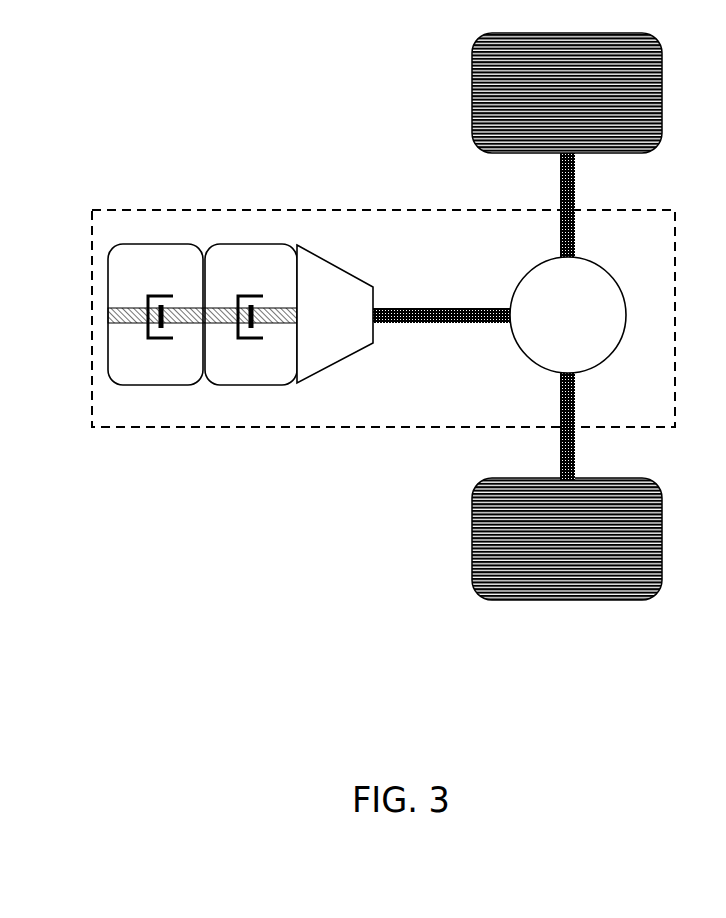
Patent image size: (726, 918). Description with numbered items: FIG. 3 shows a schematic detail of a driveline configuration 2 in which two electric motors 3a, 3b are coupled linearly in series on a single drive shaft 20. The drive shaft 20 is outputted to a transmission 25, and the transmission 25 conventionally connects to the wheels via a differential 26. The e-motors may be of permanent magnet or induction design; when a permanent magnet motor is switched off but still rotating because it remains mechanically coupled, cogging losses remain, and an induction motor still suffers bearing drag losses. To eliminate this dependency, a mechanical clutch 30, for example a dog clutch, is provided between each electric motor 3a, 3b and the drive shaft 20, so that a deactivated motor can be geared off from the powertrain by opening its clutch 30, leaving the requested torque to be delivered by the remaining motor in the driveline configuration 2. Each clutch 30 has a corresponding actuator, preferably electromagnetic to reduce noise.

The driveline configuration 2 is at (441, 412).
The first electric motor 3a is at (159, 238).
The second electric motor 3b is at (254, 238).
The drive shaft 20 is at (127, 316).
The transmission 25 is at (341, 256).
The differential 26 is at (584, 328).
The clutch 30 is at (161, 351).